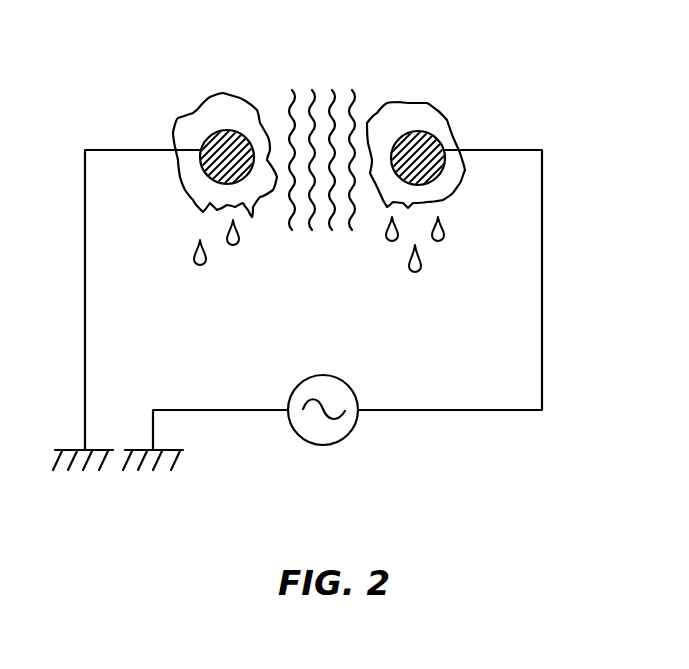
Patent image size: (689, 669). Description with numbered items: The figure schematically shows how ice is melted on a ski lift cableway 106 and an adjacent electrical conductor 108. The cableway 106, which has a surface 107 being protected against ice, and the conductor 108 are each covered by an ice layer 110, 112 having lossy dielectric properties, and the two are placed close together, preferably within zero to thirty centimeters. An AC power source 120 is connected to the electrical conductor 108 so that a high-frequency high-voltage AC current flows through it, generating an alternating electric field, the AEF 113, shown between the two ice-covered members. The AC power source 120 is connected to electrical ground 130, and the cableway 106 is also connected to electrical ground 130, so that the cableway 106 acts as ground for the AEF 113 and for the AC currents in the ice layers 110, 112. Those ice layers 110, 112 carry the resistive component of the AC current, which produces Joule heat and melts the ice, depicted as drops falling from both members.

The ski lift cableway 106 is at (228, 131).
The surface 107 is at (195, 173).
The electrical conductor 108 is at (437, 146).
The ice layer 110 is at (240, 104).
The ice layer 112 is at (423, 108).
The AEF 113 is at (326, 76).
The AC power source 120 is at (347, 423).
The electrical ground 130 is at (107, 489).